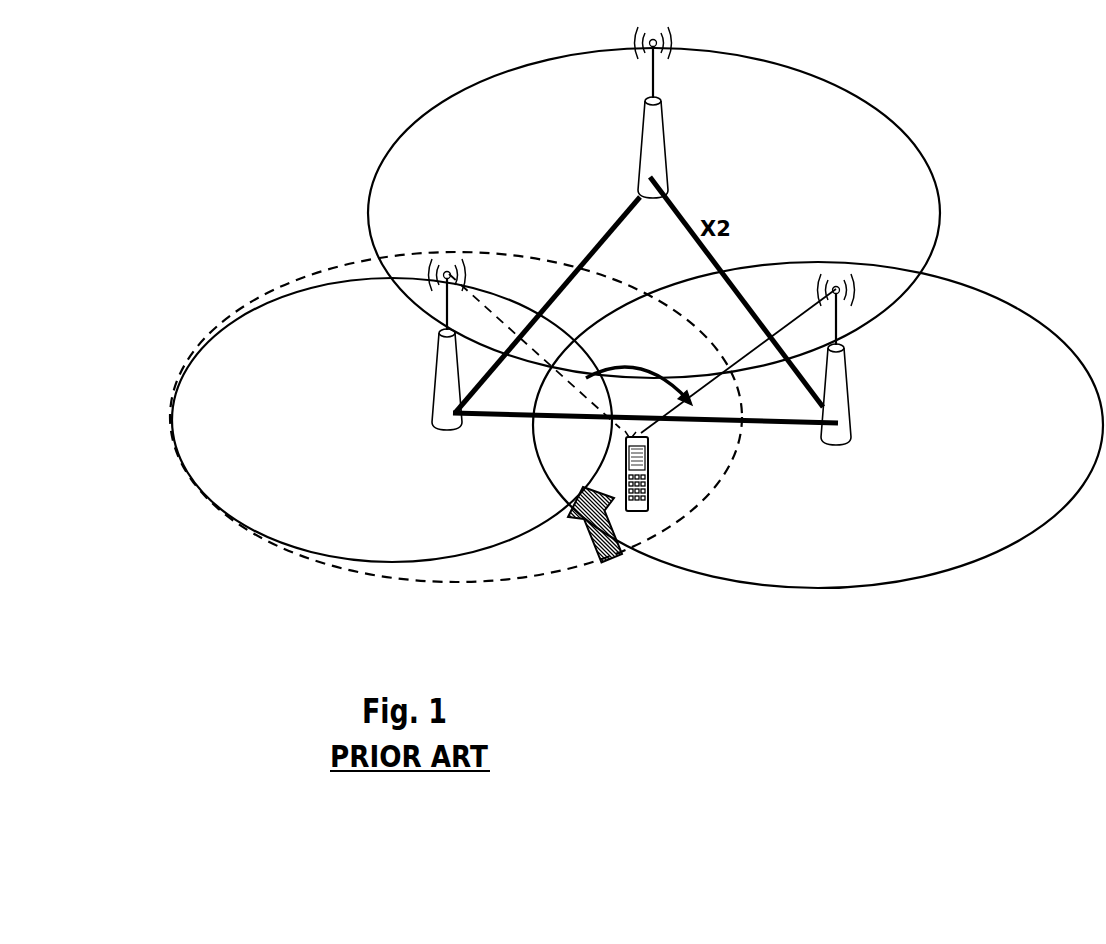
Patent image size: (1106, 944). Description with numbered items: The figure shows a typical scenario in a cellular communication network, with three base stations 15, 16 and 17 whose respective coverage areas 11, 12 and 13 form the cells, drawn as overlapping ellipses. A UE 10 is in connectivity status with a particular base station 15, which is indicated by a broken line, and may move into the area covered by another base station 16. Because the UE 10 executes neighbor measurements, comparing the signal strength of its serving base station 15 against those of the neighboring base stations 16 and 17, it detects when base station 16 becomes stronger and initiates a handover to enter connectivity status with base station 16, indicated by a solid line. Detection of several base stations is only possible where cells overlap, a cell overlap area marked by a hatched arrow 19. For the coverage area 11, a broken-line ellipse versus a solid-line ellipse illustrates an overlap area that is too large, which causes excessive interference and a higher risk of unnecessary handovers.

The UE 10 is at (664, 471).
The coverage area 11 is at (456, 413).
The coverage area 12 is at (654, 213).
The coverage area 13 is at (818, 442).
The base station 15 is at (412, 344).
The base station 16 is at (868, 359).
The base station 17 is at (689, 112).
The hatched arrow 19 is at (610, 553).